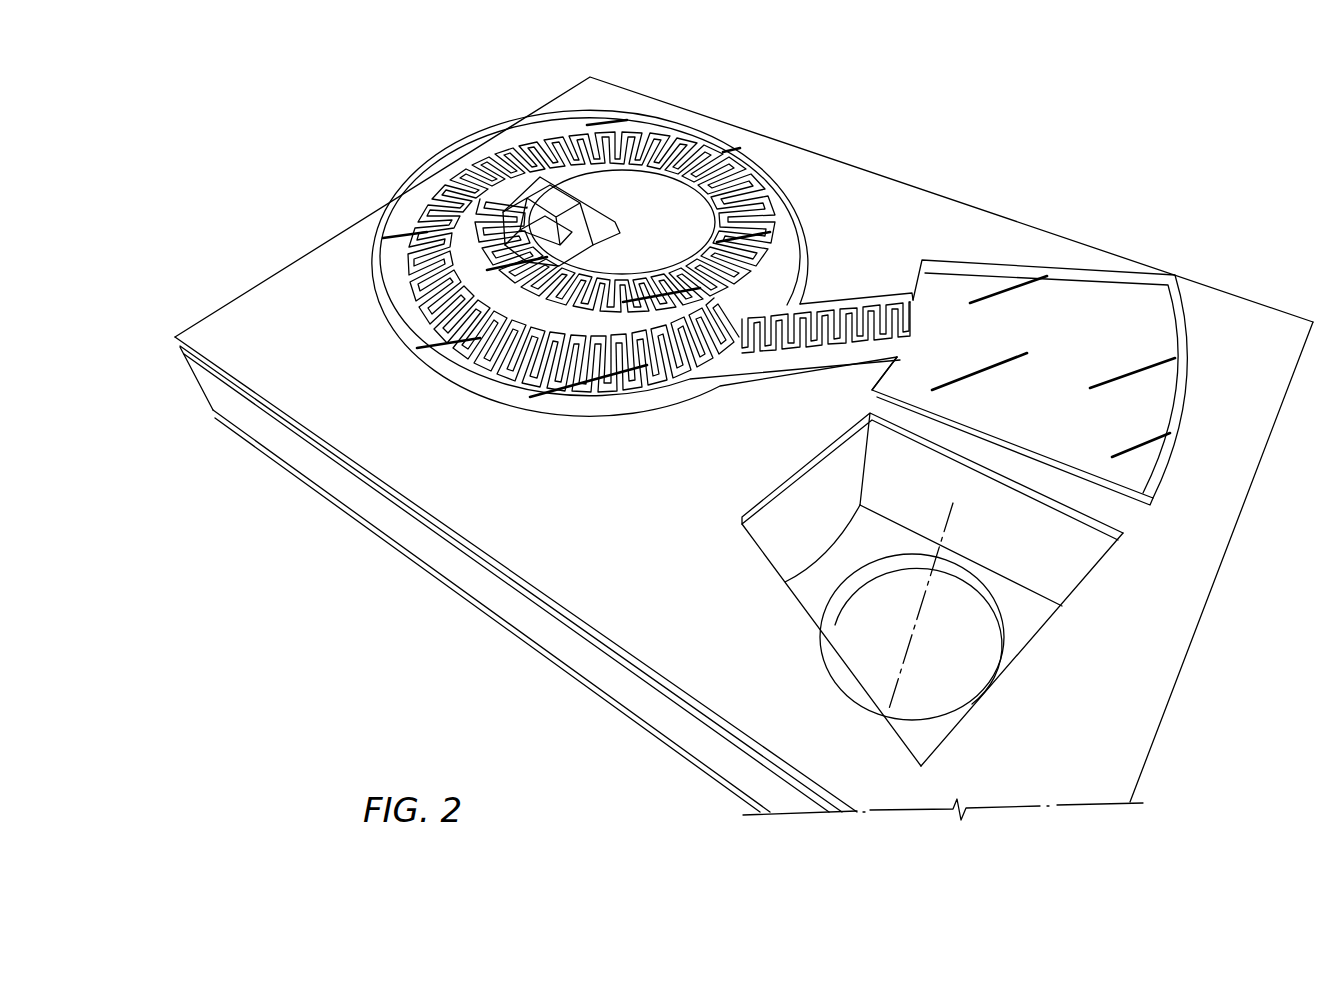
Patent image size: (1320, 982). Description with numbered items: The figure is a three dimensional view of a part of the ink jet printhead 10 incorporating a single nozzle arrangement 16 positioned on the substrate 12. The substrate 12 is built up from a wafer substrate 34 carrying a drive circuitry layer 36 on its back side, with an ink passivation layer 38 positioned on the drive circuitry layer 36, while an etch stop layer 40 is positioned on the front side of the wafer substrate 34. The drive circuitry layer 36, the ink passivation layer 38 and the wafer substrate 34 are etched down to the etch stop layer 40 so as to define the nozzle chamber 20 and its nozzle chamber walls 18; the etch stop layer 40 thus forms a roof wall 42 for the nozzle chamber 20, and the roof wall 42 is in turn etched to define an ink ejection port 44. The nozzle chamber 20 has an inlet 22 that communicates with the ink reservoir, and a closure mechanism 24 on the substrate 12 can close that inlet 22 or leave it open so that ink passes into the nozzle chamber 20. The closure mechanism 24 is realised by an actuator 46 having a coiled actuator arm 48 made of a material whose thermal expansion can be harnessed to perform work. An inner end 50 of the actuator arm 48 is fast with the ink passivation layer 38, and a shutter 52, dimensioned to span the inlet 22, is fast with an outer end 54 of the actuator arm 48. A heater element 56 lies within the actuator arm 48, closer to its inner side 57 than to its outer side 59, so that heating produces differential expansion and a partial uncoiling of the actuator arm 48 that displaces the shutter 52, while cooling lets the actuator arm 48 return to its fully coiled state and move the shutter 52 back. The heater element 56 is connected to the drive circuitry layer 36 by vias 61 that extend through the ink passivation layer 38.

The printhead 10 is at (318, 190).
The substrate 12 is at (657, 99).
The nozzle arrangement 16 is at (870, 160).
The nozzle chamber walls 18 is at (807, 517).
The nozzle chamber 20 is at (798, 557).
The inlet 22 is at (1036, 638).
The closure mechanism 24 is at (398, 328).
The wafer substrate 34 is at (442, 553).
The drive circuitry layer 36 is at (374, 483).
The ink passivation layer 38 is at (537, 600).
The etch stop layer 40 is at (589, 683).
The roof wall 42 is at (1003, 681).
The ink ejection port 44 is at (866, 640).
The actuator 46 is at (563, 415).
The coiled actuator arm 48 is at (787, 315).
The inner end 50 is at (622, 275).
The shutter 52 is at (1097, 295).
The outer end 54 is at (900, 292).
The heater element 56 is at (510, 375).
The inner side 57 is at (680, 167).
The outer side 59 is at (796, 243).
The vias 61 is at (570, 222).